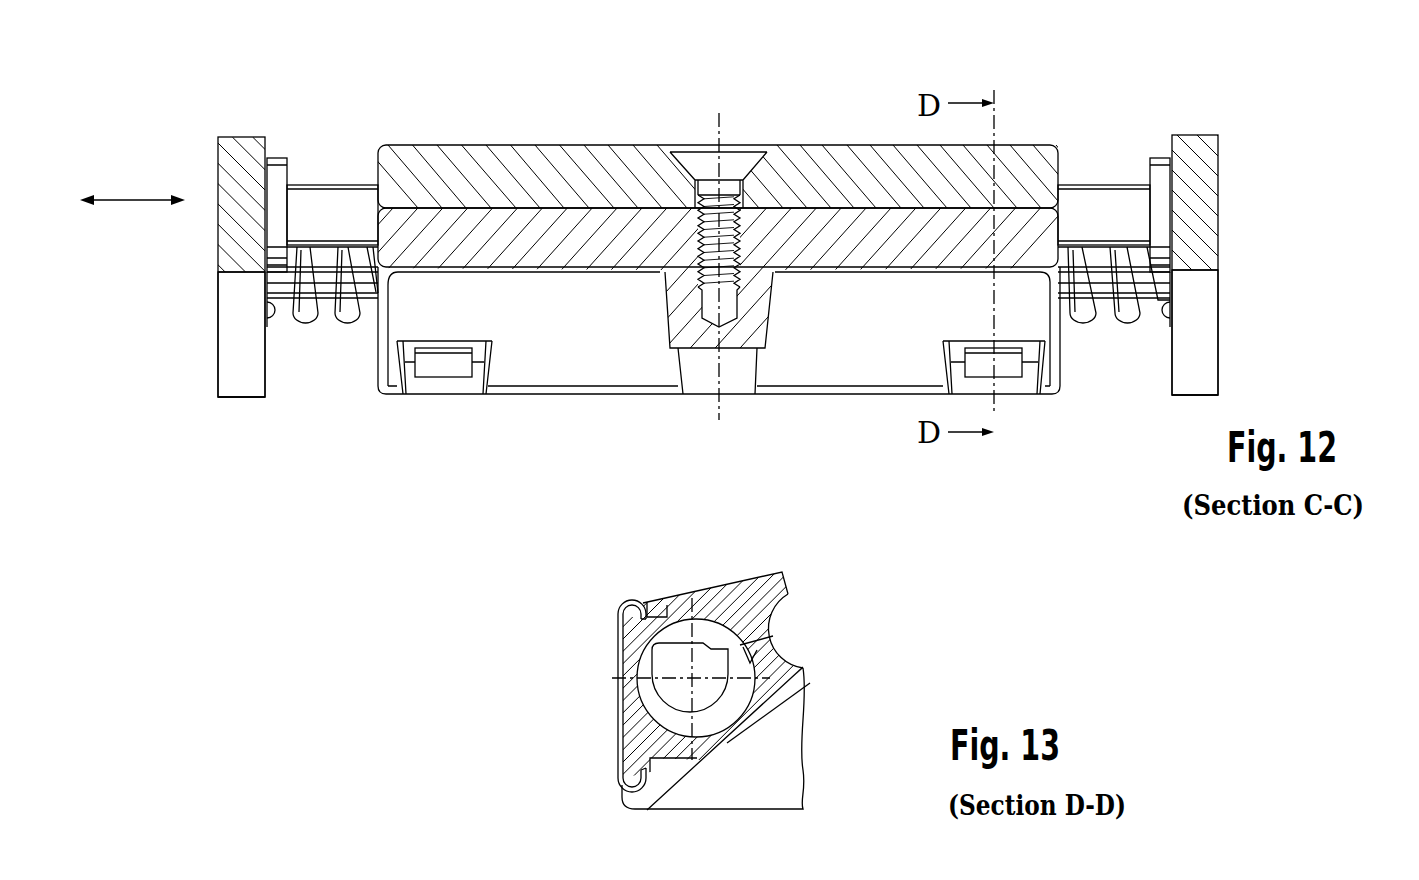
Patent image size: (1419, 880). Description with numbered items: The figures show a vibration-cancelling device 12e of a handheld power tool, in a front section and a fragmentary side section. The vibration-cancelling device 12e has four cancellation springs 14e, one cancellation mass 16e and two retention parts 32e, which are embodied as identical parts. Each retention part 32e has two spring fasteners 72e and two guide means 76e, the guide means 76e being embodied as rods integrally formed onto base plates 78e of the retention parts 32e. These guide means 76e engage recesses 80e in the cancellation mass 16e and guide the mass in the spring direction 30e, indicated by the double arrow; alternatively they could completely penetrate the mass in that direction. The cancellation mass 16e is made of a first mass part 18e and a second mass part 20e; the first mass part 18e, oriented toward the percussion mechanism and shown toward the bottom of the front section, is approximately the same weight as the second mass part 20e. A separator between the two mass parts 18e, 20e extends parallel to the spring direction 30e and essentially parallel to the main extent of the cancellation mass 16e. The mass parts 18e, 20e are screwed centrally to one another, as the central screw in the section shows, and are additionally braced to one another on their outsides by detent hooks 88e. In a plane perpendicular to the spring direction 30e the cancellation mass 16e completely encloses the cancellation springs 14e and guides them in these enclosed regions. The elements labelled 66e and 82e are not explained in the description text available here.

In FIG. 12, the vibration-cancelling device 12e is at (390, 68).
In FIG. 12, the cancellation springs 14e is at (348, 312).
In FIG. 12, the cancellation mass 16e is at (855, 125).
In FIG. 13, the cancellation mass 16e is at (638, 565).
In FIG. 12, the first mass part 18e is at (550, 390).
In FIG. 13, the first mass part 18e is at (800, 686).
In FIG. 12, the second mass part 20e is at (620, 145).
In FIG. 13, the second mass part 20e is at (712, 605).
In FIG. 12, the spring direction 30e is at (130, 205).
In FIG. 12, the retention parts 32e is at (232, 375).
In FIG. 12, the side wall 66e is at (212, 289).
In FIG. 12, the spring fasteners 72e is at (282, 280).
In FIG. 12, the guide means 76e is at (337, 198).
In FIG. 12, the base plates 78e is at (232, 337).
In FIG. 13, the base plates 78e is at (640, 653).
In FIG. 13, the recesses 80e is at (795, 638).
In FIG. 12, the base wall 82e is at (618, 390).
In FIG. 12, the detent hooks 88e is at (445, 370).
In FIG. 13, the detent hooks 88e is at (620, 716).